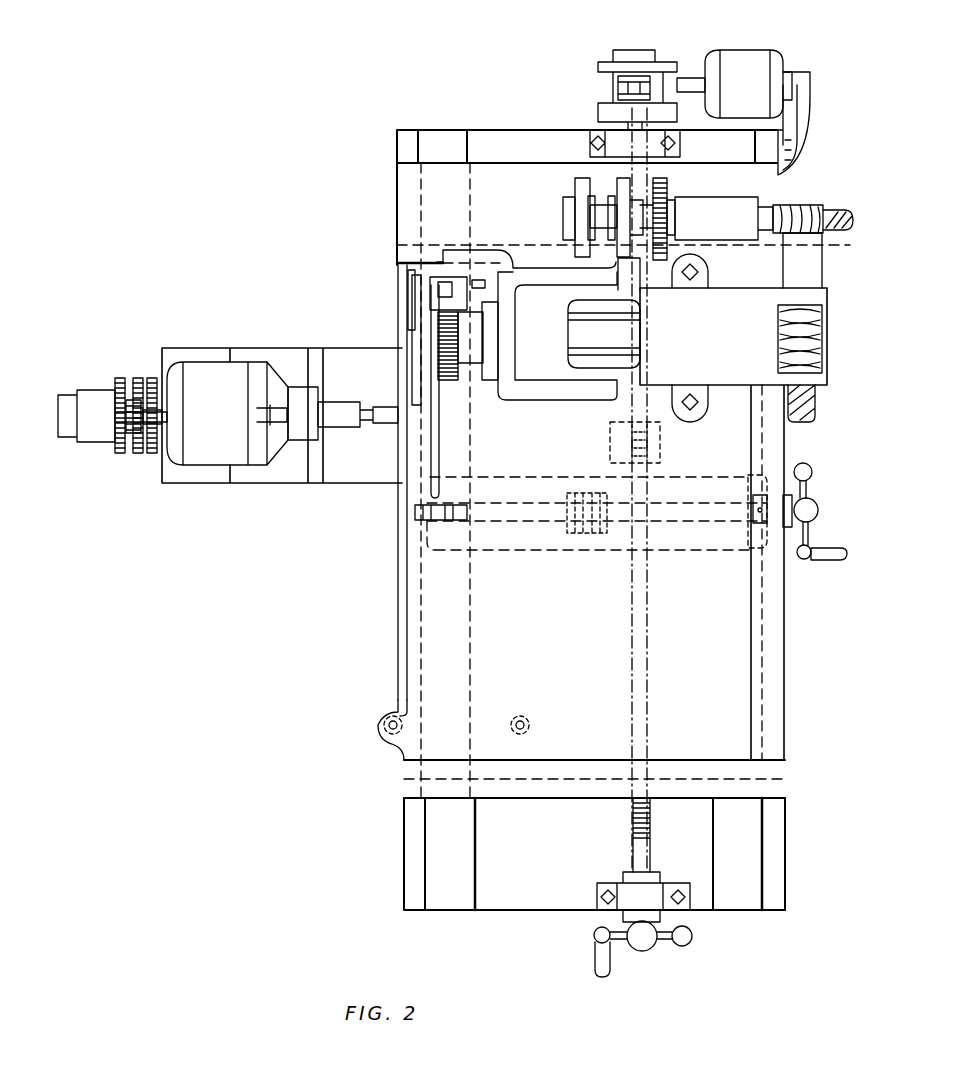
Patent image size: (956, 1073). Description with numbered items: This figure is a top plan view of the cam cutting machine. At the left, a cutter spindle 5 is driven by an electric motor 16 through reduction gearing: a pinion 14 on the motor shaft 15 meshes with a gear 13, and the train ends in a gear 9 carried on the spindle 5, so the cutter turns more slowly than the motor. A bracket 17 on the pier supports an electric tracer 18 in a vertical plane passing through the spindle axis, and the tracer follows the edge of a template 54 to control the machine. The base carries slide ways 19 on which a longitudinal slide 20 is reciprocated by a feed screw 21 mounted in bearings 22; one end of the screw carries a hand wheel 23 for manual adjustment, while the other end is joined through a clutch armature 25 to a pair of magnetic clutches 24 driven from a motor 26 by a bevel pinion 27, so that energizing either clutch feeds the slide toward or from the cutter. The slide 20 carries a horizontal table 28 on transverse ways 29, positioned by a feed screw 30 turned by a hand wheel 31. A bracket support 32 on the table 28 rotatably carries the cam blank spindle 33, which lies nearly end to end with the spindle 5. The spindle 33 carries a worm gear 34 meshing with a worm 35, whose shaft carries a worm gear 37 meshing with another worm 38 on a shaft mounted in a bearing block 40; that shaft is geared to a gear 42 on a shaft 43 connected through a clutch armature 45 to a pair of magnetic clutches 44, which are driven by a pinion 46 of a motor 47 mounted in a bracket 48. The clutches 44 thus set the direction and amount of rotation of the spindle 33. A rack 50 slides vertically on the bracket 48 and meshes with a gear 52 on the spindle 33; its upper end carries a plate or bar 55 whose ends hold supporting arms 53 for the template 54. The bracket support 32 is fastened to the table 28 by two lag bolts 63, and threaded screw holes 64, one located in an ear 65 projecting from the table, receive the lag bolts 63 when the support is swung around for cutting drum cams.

The spindle 5 is at (65, 433).
The gear 9 is at (152, 453).
The gear 13 is at (138, 378).
The pinion 14 is at (137, 422).
The shaft 15 is at (152, 378).
The electric motor 16 is at (282, 415).
The bracket 17 is at (300, 395).
The electric tracer 18 is at (387, 410).
The slide ways 19 is at (745, 870).
The longitudinal slide 20 is at (780, 782).
The feed screw 21 is at (640, 846).
The bearings 22 is at (627, 895).
The hand wheel 23 is at (607, 965).
The magnetic clutches 24 is at (604, 80).
The clutch armature 25 is at (632, 88).
The motor 26 is at (755, 60).
The bevel pinion 27 is at (680, 78).
The horizontal table 28 is at (438, 603).
The transverse ways 29 is at (412, 788).
The feed screw 30 is at (735, 512).
The hand wheel 31 is at (815, 538).
The bracket support 32 is at (733, 524).
The spindle 33 is at (478, 365).
The worm gear 34 is at (805, 422).
The worm 35 is at (825, 335).
The worm gear 37 is at (835, 225).
The worm 38 is at (812, 198).
The bearing block 40 is at (720, 212).
The gear 42 is at (667, 183).
The shaft 43 is at (648, 217).
The magnetic clutches 44 is at (620, 185).
The clutch armature 45 is at (600, 213).
The pinion 46 is at (590, 253).
The motor 47 is at (582, 332).
The bracket 48 is at (545, 398).
The rack 50 is at (447, 282).
The gear 52 is at (450, 380).
The supporting arms 53 is at (432, 490).
The template 54 is at (402, 353).
The plate or bar 55 is at (430, 262).
The lag bolts 63 is at (687, 398).
The threaded screw holes 64 is at (525, 720).
The ear 65 is at (378, 745).